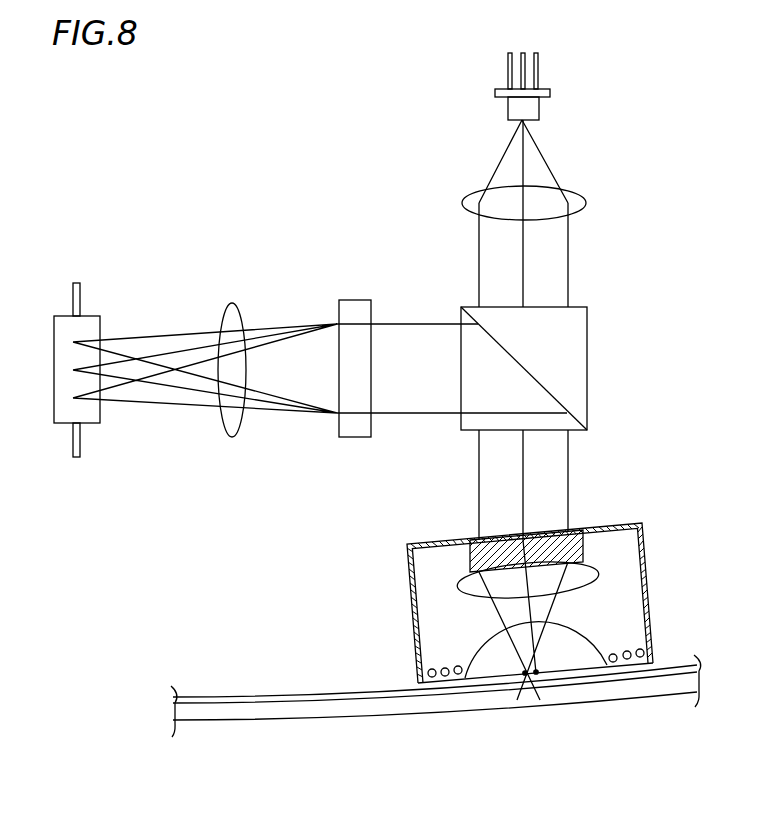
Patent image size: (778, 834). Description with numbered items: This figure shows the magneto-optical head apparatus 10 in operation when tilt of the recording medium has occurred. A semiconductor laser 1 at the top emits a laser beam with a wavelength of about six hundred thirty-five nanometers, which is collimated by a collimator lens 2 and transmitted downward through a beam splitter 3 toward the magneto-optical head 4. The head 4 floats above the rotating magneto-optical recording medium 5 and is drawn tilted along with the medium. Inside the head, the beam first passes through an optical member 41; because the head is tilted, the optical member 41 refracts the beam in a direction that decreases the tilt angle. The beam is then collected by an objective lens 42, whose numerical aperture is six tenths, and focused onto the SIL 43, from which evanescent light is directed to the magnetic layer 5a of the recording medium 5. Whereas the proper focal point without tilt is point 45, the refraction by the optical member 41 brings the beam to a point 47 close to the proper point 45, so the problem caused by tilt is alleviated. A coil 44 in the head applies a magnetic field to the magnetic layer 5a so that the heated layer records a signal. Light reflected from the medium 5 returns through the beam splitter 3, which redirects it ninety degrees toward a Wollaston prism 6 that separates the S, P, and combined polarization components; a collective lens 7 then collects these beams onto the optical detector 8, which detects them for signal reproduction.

The semiconductor laser 1 is at (550, 92).
The collimator lens 2 is at (587, 203).
The beam splitter 3 is at (577, 329).
The magneto-optical head 4 is at (648, 511).
The magneto-optical recording medium 5 is at (286, 710).
The magnetic layer 5a is at (335, 700).
The Wollaston prism 6 is at (355, 312).
The collective lens 7 is at (232, 312).
The optical detector 8 is at (65, 323).
The magneto-optical head apparatus 10 is at (421, 230).
The optical member 41 is at (547, 532).
The objective lens 42 is at (585, 575).
The SIL 43 is at (572, 638).
The coil 44 is at (418, 658).
The point 45 is at (536, 673).
The point 47 is at (526, 674).